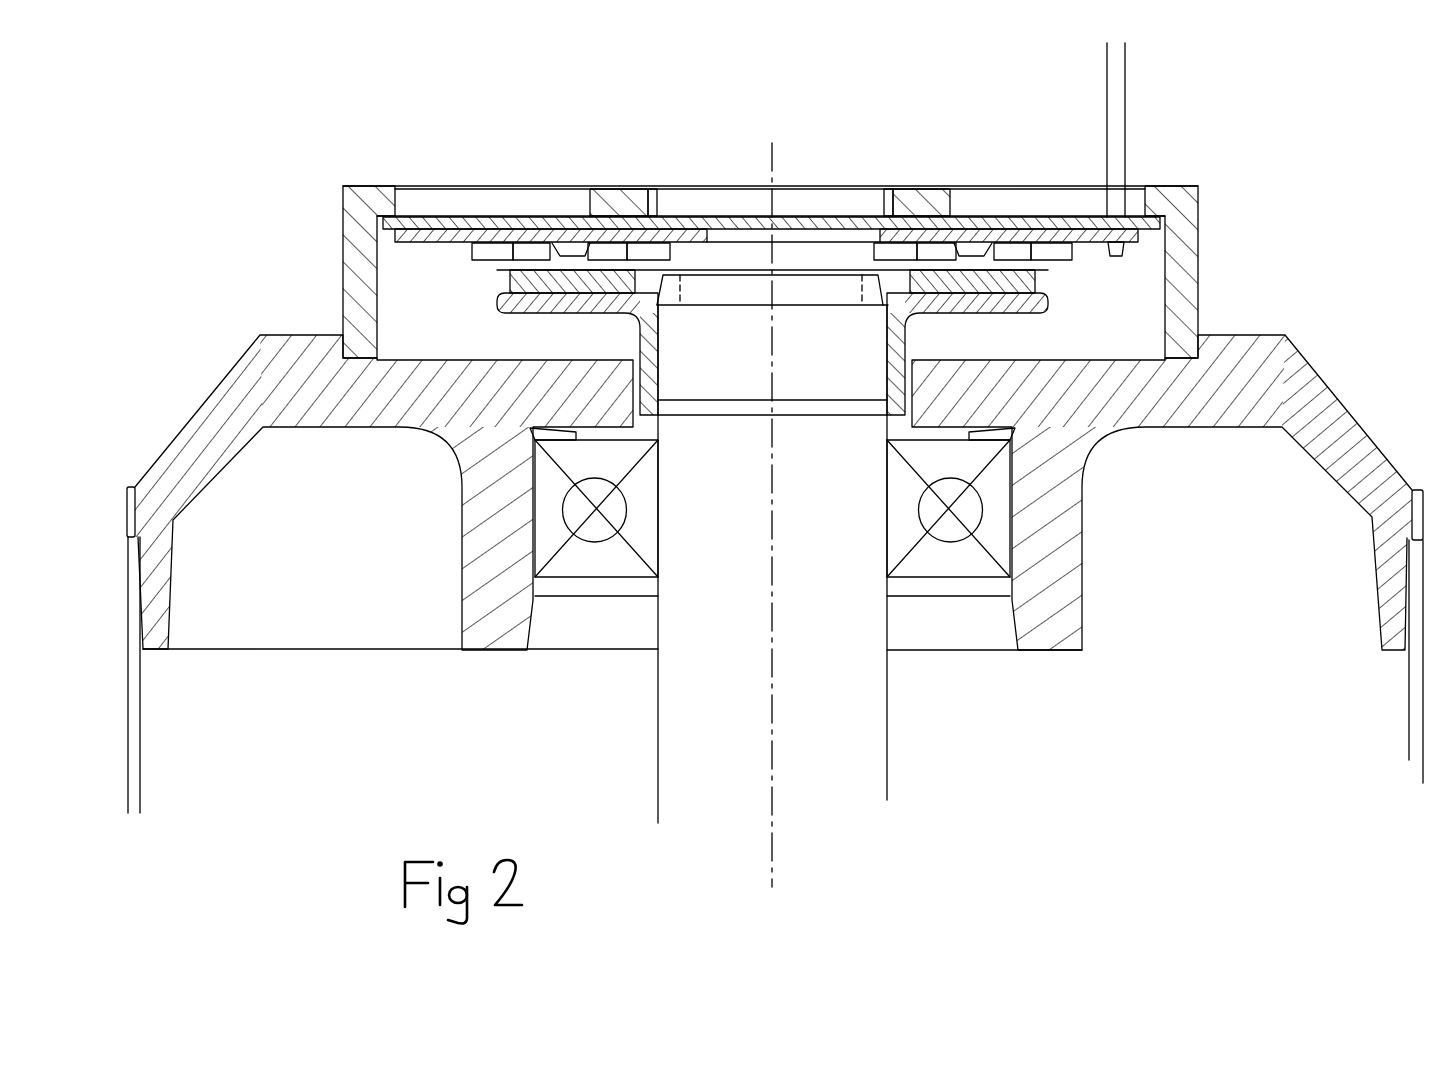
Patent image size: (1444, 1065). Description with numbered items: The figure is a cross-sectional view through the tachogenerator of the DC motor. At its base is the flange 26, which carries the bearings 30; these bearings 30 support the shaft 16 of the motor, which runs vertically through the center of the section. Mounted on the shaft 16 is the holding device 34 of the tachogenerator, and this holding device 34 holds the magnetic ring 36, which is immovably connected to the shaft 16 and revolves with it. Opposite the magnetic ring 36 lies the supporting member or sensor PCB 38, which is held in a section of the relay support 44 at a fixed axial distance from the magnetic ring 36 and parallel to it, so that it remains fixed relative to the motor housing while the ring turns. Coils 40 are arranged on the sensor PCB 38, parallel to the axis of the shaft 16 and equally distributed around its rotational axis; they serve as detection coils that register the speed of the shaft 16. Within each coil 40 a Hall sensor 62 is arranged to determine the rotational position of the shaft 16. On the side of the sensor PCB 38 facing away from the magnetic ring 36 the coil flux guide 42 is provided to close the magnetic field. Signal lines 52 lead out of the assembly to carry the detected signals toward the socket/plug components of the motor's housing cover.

The shaft 16 is at (870, 758).
The flange 26 is at (1278, 363).
The bearings 30 is at (985, 527).
The holding device 34 is at (532, 292).
The magnetic ring 36 is at (597, 272).
The supporting member (sensor PCB) 38 is at (663, 222).
The coils 40 is at (888, 247).
The coil flux guide 42 is at (832, 222).
The relay support 44 is at (1180, 232).
The signal lines 52 is at (1120, 110).
The Hall sensor 62 is at (985, 242).